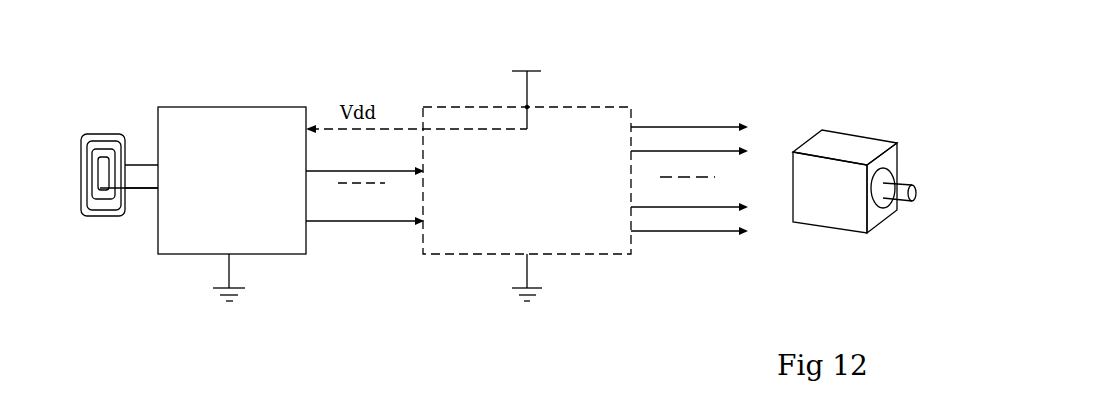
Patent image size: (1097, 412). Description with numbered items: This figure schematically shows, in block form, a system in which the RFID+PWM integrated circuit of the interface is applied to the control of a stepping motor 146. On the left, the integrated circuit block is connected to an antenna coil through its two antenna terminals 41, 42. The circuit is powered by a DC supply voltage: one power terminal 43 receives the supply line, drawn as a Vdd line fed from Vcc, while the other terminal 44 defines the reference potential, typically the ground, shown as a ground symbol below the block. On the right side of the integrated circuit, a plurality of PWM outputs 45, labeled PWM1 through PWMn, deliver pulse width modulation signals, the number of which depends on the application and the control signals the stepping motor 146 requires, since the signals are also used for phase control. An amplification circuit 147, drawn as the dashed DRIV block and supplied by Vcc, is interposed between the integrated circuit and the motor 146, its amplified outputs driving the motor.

The terminal 41 is at (138, 165).
The terminal 42 is at (140, 190).
The terminal 43 is at (309, 126).
The terminal 44 is at (229, 270).
The PWM output 45 is at (307, 172).
The stepping motor 146 is at (861, 112).
The amplification circuit 147 is at (602, 107).